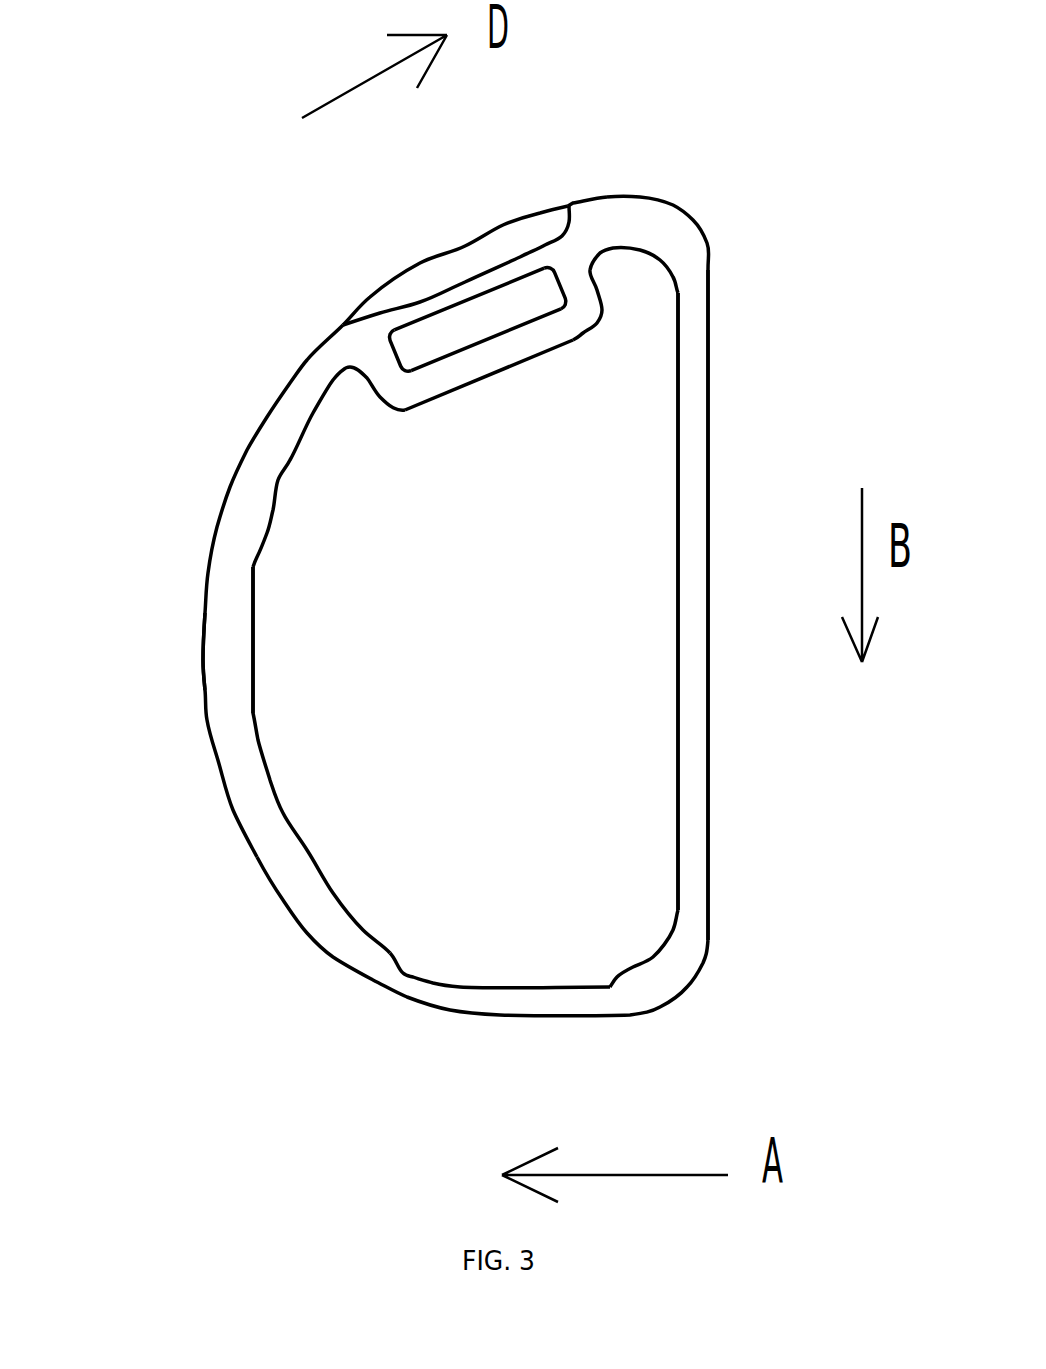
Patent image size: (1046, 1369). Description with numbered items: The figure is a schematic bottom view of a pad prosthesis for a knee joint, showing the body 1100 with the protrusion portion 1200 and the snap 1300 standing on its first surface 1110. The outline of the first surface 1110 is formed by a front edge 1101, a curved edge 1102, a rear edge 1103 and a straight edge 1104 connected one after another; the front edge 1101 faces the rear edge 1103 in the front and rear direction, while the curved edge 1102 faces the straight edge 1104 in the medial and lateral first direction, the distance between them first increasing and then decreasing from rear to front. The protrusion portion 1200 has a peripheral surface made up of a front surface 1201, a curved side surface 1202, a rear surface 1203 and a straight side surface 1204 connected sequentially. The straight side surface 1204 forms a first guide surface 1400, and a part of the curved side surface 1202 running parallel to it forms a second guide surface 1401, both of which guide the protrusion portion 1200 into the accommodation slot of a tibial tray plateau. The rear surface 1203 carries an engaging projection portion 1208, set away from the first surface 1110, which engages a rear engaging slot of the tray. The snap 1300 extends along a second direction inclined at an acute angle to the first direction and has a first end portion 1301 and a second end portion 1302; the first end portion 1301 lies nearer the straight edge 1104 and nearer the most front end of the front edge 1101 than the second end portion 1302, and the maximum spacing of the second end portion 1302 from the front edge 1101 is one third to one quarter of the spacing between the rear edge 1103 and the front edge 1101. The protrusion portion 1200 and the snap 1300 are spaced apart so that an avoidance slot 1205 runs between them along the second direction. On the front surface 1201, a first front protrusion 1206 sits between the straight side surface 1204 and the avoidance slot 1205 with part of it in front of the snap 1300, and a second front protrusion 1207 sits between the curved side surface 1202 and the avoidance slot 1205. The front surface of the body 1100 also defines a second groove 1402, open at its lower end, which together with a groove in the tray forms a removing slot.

The body 1100 is at (625, 198).
The front edge 1101 is at (583, 195).
The curved edge 1102 is at (205, 590).
The rear edge 1103 is at (558, 1017).
The straight edge 1104 is at (709, 647).
The first surface 1110 is at (627, 227).
The protrusion portion 1200 is at (378, 842).
The front surface 1201 is at (487, 380).
The curved side surface 1202 is at (270, 780).
The rear surface 1203 is at (632, 977).
The straight side surface 1204 is at (680, 705).
The avoidance slot 1205 is at (530, 337).
The first front protrusion 1206 is at (643, 252).
The second front protrusion 1207 is at (347, 377).
The engaging projection portion 1208 is at (498, 988).
The snap 1300 is at (384, 247).
The first end portion 1301 is at (556, 287).
The second end portion 1302 is at (399, 352).
The first guide surface 1400 is at (680, 575).
The second guide surface 1401 is at (252, 637).
The second groove 1402 is at (400, 298).